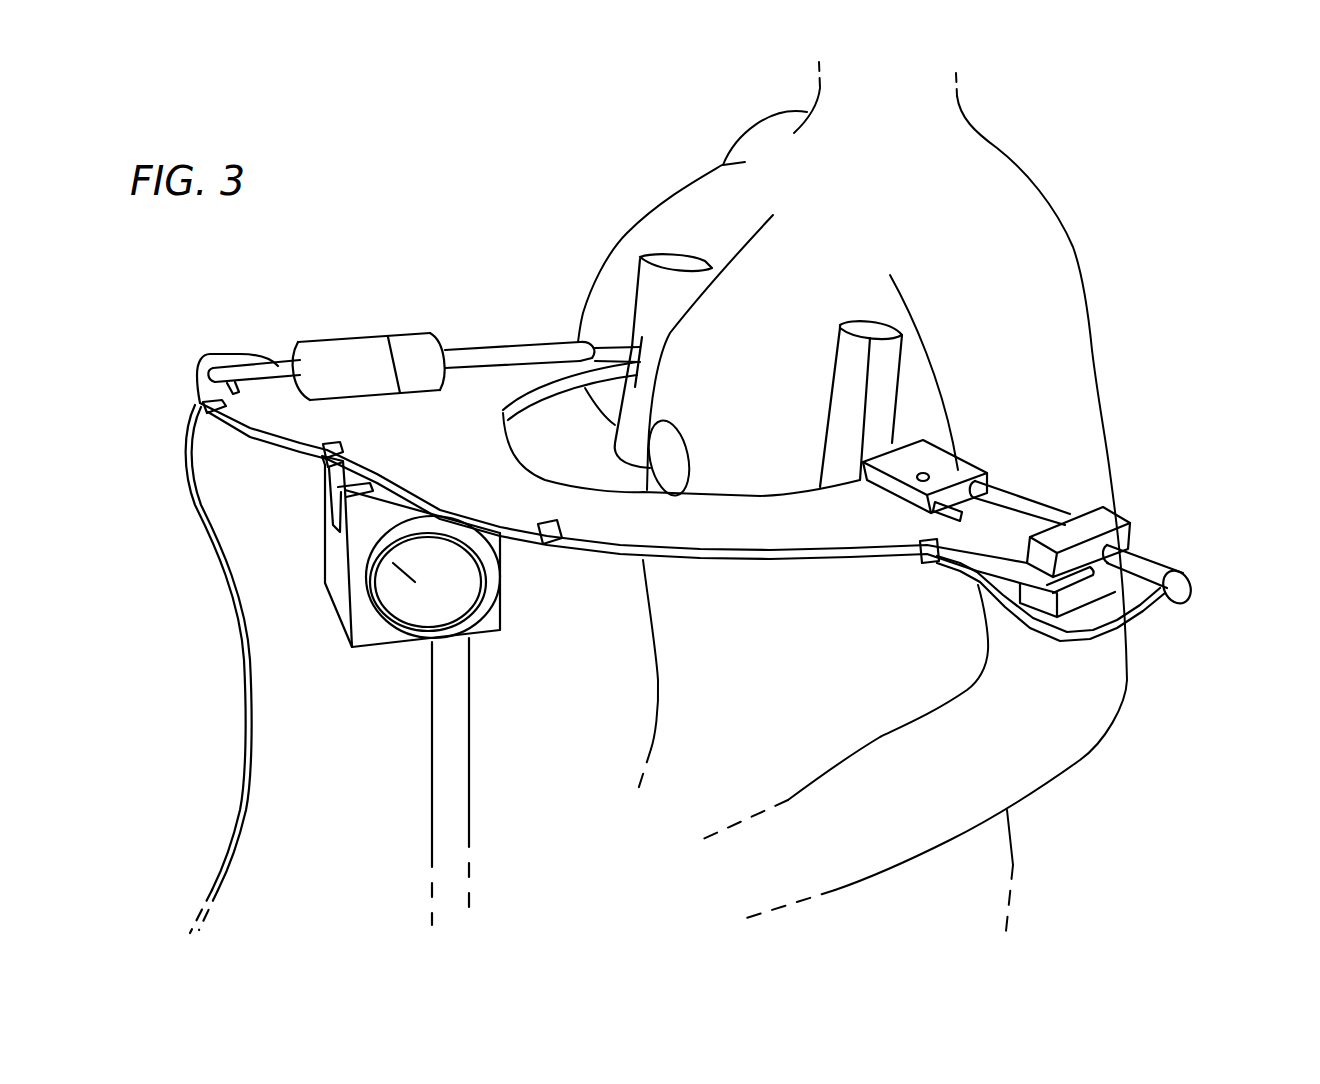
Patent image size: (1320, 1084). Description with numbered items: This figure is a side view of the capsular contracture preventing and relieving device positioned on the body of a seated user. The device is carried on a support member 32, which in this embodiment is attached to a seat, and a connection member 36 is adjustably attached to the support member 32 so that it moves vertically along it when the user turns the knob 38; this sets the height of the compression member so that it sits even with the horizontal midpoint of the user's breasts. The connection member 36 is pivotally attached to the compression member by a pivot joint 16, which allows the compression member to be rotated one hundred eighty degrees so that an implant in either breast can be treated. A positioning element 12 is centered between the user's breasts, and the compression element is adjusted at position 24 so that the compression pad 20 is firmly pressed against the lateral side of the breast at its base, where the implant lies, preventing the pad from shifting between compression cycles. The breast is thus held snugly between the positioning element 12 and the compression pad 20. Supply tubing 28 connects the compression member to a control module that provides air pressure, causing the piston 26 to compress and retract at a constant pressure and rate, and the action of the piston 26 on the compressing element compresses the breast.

The positioning element 12 is at (657, 278).
The pivot joint 16 is at (370, 357).
The compression pad 20 is at (885, 377).
The position 24 is at (926, 472).
The piston 26 is at (1023, 507).
The supply tubing 28 is at (242, 768).
The support member 32 is at (453, 725).
The connection member 36 is at (367, 630).
The knob 38 is at (465, 587).